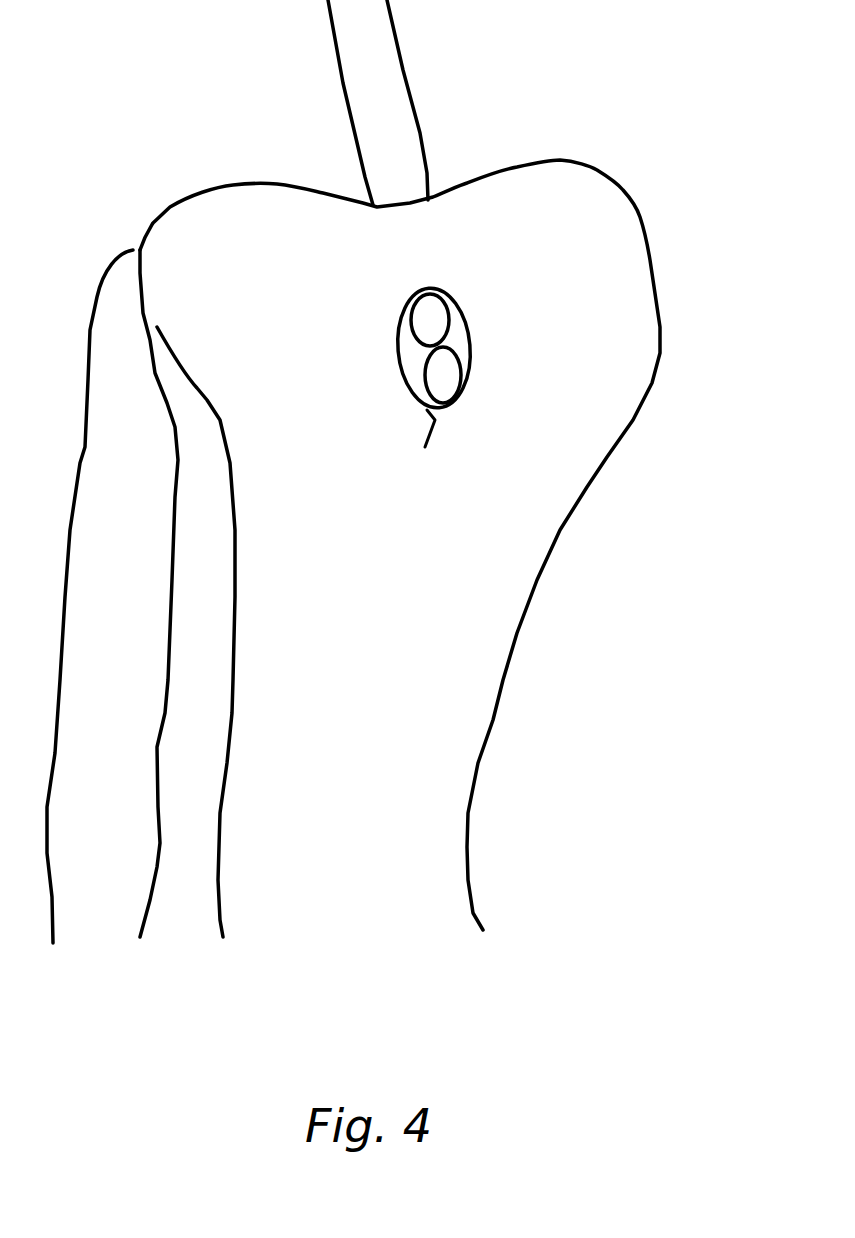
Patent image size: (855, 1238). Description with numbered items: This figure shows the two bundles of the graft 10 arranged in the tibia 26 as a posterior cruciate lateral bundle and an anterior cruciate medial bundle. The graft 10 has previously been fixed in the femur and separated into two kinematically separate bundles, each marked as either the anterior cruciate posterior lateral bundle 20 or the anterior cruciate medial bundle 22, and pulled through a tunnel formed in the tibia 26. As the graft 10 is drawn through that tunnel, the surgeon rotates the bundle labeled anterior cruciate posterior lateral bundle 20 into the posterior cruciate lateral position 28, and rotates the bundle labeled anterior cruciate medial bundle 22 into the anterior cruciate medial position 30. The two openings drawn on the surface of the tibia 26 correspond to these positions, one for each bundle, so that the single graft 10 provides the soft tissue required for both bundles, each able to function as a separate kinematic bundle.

The graft 10 is at (393, 100).
The anterior cruciate posterior lateral bundle 20 is at (413, 335).
The anterior cruciate medial bundle 22 is at (443, 377).
The tibia 26 is at (608, 218).
The posterior cruciate lateral position 28 is at (403, 340).
The anterior cruciate medial position 30 is at (423, 455).